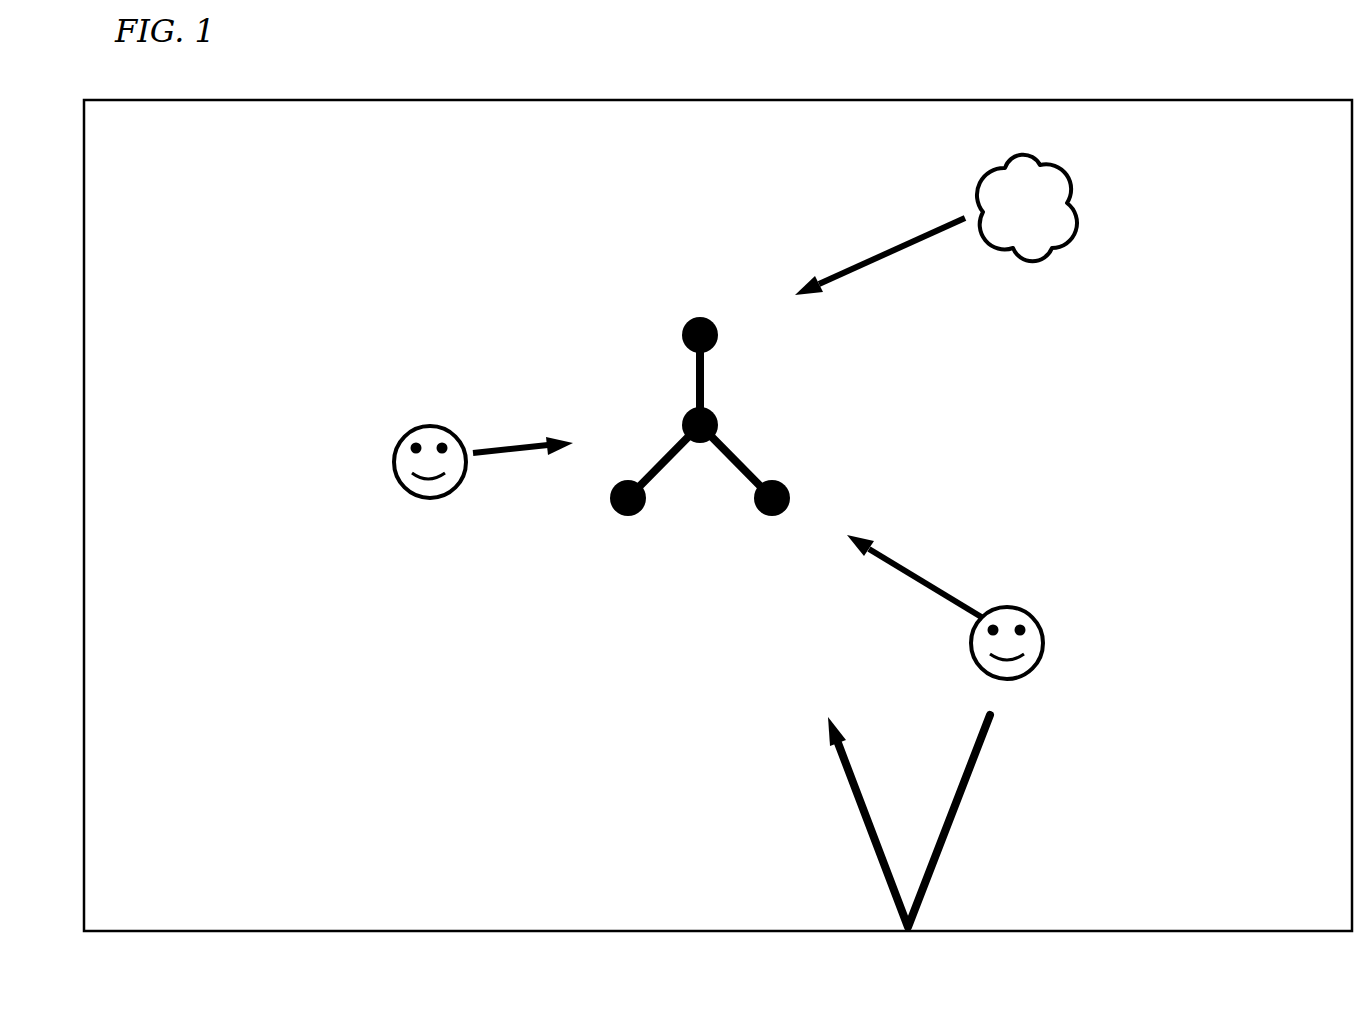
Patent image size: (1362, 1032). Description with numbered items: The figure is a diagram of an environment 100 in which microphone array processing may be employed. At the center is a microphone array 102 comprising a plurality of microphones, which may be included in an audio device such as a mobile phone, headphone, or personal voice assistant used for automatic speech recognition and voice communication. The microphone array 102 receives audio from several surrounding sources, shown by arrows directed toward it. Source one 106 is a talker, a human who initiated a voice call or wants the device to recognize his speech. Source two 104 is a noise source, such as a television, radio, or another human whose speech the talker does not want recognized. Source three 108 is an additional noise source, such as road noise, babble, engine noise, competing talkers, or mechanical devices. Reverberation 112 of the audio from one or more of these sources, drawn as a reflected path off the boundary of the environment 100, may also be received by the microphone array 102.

The environment 100 is at (1231, 76).
The microphone array 102 is at (704, 383).
The source 2 104 is at (394, 462).
The source 1 106 is at (1044, 638).
The source 3 108 is at (1078, 222).
The reverberation 112 is at (842, 774).